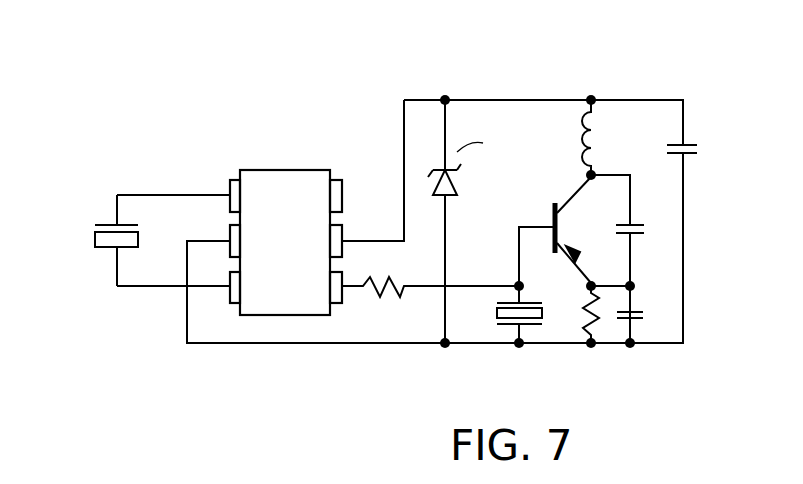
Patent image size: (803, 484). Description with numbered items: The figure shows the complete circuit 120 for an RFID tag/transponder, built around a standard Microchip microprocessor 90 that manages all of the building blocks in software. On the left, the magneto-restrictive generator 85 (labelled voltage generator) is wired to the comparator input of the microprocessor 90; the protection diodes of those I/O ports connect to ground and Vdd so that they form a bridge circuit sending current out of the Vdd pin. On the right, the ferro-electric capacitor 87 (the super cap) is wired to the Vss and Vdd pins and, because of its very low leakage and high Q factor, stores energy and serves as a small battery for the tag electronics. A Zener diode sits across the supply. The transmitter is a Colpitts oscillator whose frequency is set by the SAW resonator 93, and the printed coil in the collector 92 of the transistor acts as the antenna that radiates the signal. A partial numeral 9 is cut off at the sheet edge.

The complete circuit 120 is at (288, 84).
The microprocessor 90 is at (277, 193).
The magneto-restrictive generator 85 is at (97, 212).
The collector 92 is at (602, 138).
The ferro-electric capacitor 87 is at (693, 132).
The SAW resonator 93 is at (535, 337).
The partial numeral (cut off at sheet edge) 9 is at (4, 156).